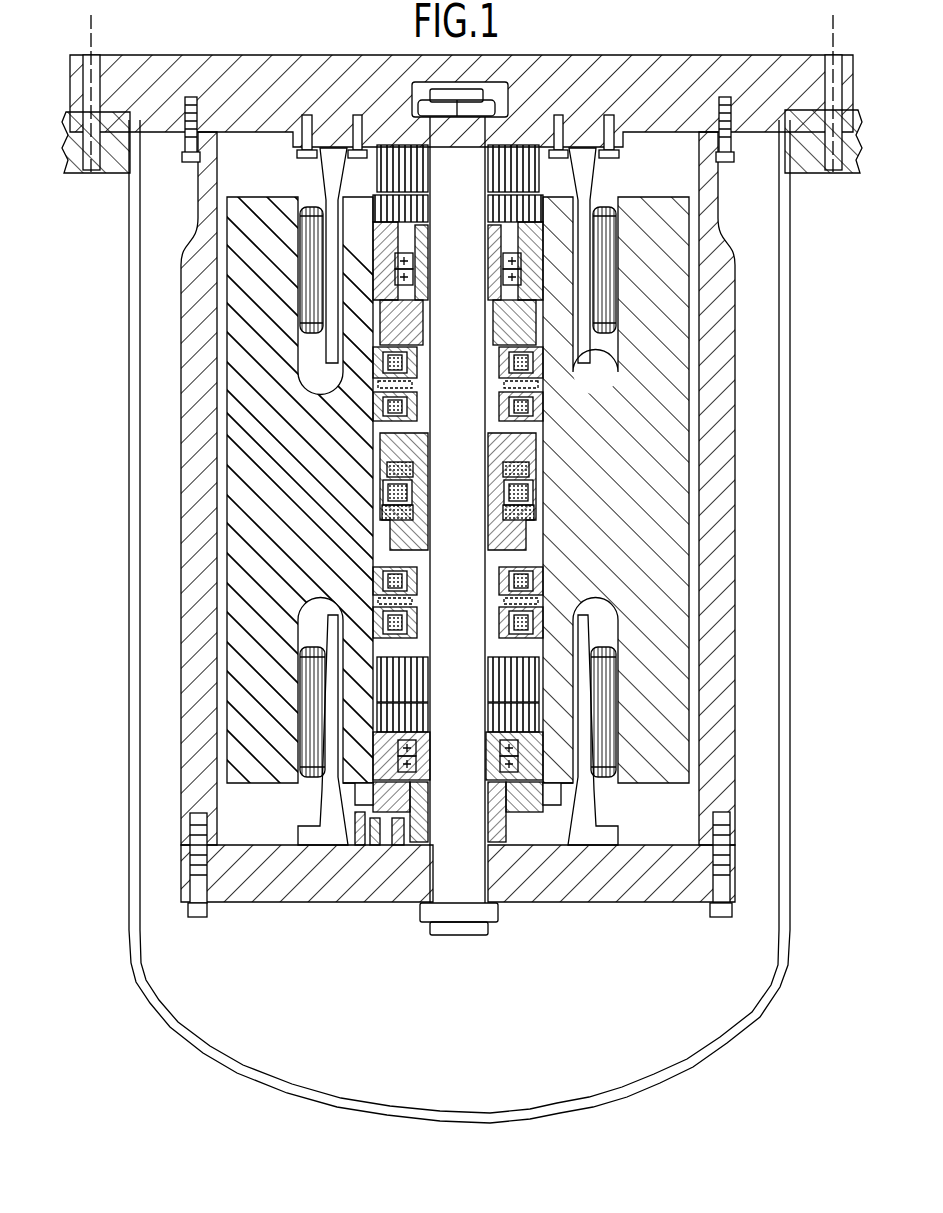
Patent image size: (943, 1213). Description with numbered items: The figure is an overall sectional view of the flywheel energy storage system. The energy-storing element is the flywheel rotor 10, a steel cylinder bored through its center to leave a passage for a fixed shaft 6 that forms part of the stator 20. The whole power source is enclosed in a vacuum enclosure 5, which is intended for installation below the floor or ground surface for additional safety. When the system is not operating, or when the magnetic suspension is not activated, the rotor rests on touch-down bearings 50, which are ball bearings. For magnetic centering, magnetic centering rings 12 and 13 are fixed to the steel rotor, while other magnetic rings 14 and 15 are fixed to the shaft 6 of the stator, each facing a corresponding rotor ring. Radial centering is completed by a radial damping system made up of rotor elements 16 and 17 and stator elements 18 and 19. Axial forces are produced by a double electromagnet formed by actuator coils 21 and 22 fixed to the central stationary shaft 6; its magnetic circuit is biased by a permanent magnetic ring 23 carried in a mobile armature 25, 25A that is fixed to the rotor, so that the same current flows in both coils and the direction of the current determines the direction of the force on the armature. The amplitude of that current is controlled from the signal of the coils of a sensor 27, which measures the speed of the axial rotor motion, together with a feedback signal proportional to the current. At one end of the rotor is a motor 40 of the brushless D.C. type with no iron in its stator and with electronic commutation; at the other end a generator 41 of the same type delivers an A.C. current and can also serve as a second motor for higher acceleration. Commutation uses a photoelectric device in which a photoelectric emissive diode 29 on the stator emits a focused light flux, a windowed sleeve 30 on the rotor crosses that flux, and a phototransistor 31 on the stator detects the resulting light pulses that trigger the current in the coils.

The vacuum enclosure 5 is at (791, 421).
The fixed shaft 6 is at (469, 869).
The flywheel rotor 10 is at (317, 544).
The magnetic centering ring 12 is at (492, 212).
The magnetic centering ring 13 is at (488, 717).
The magnetic ring 14 is at (492, 172).
The magnetic ring 15 is at (490, 680).
The rotor element of radial damping system 16 is at (408, 362).
The rotor element of radial damping system 17 is at (413, 580).
The stator element of radial damping system 18 is at (420, 383).
The stator element of radial damping system 19 is at (413, 599).
The stator 20 is at (565, 902).
The actuator coil of double electromagnet 21 is at (487, 460).
The actuator coil of double electromagnet 22 is at (490, 514).
The permanent magnetic ring 23 is at (490, 482).
The mobile armature 25 is at (412, 492).
The mobile armature 25A is at (386, 492).
The sensor 27 is at (410, 823).
The photoelectric emissive diode 29 is at (357, 833).
The windowed sleeve 30 is at (378, 840).
The phototransistor 31 is at (398, 840).
The motor 40 is at (598, 367).
The generator 41 is at (612, 695).
The touch-down bearings 50 is at (516, 262).